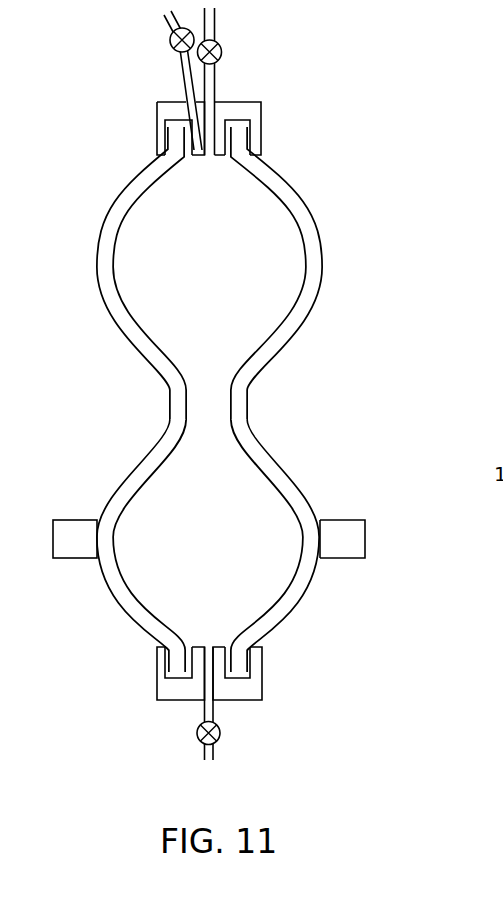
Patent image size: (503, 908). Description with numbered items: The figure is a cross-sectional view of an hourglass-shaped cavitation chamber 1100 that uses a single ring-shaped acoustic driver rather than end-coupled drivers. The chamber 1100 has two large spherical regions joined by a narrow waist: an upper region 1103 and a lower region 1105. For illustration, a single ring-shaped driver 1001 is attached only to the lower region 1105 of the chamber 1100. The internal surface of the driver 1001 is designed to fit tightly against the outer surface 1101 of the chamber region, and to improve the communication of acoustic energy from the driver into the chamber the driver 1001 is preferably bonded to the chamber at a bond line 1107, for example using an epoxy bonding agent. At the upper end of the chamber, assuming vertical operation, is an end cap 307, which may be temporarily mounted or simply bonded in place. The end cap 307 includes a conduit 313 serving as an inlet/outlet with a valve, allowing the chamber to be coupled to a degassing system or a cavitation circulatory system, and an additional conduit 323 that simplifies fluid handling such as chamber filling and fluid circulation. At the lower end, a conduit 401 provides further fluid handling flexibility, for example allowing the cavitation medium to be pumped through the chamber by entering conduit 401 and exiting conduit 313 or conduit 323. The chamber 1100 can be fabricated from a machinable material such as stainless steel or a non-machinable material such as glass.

The chamber 1100 is at (344, 199).
The upper region 1103 is at (235, 276).
The lower region 1105 is at (235, 552).
The outer surface 1101 is at (330, 488).
The bond line 1107 is at (330, 509).
The ring-shaped driver 1001 is at (75, 520).
The end cap 307 is at (257, 117).
The conduit 313 is at (216, 96).
The additional conduit 323 is at (188, 87).
The conduit 401 is at (214, 708).